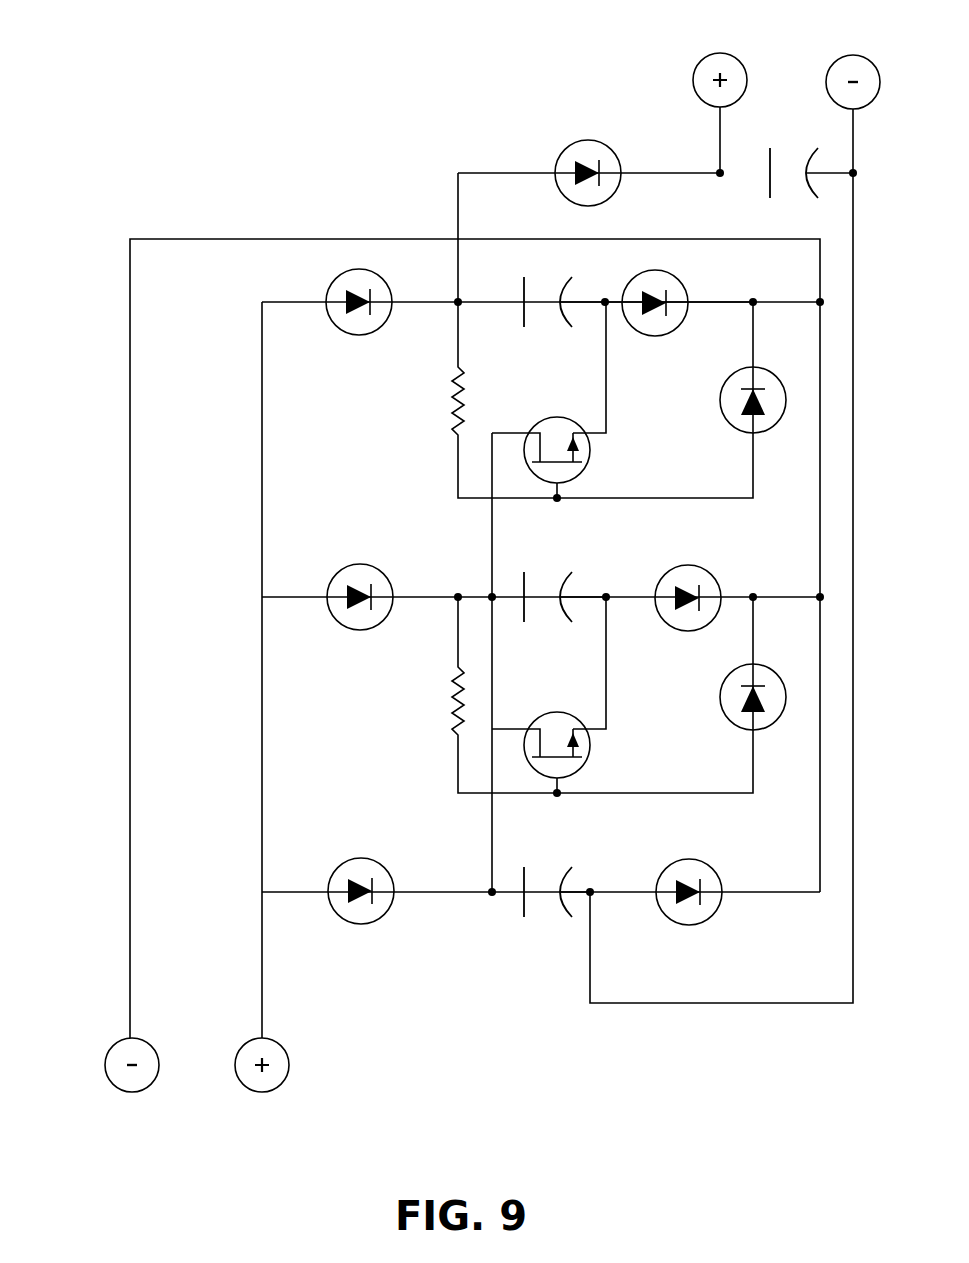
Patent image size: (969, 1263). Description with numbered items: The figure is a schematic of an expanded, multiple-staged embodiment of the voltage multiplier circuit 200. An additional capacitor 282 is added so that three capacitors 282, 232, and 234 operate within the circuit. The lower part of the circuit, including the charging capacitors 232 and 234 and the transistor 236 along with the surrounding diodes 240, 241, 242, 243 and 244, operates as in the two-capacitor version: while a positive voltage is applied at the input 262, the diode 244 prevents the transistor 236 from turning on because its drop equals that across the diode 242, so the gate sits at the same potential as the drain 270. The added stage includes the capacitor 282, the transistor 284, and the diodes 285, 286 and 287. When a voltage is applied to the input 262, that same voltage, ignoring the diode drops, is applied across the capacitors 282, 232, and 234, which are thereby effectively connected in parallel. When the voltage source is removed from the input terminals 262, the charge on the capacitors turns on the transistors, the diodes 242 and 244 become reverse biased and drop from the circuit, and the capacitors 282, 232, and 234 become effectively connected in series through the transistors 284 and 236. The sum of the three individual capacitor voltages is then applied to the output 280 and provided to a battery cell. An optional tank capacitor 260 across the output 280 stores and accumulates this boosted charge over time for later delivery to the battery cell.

The voltage multiplier circuit 200 is at (128, 152).
The output 280 is at (655, 76).
The input 262 is at (328, 1053).
The tank capacitor 260 is at (787, 191).
The capacitor 282 is at (540, 283).
The charging capacitor 232 is at (541, 580).
The charging capacitor 234 is at (541, 875).
The diode 285 is at (358, 336).
The drain 270 is at (607, 298).
The diode 287 is at (655, 337).
The transistor 284 is at (557, 418).
The diode 286 is at (720, 400).
The diode 240 is at (358, 565).
The diode 242 is at (688, 565).
The transistor 236 is at (557, 712).
The diode 244 is at (720, 697).
The diode 241 is at (358, 858).
The diode 243 is at (689, 858).